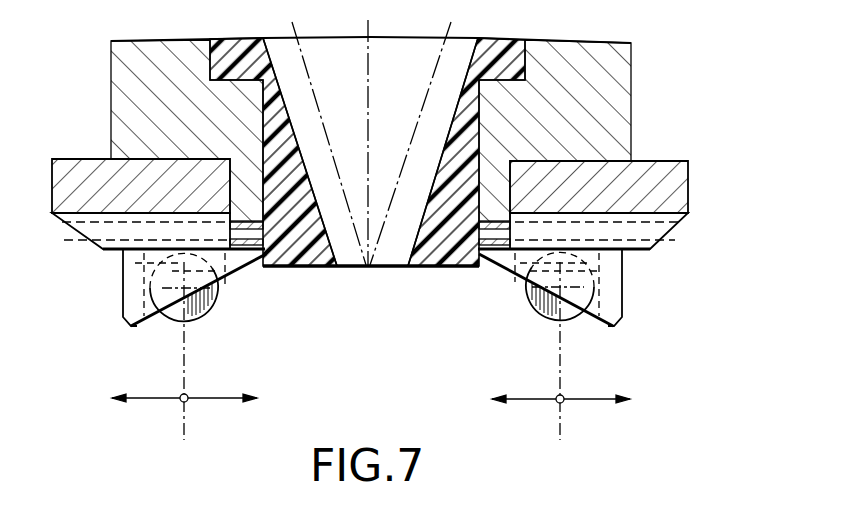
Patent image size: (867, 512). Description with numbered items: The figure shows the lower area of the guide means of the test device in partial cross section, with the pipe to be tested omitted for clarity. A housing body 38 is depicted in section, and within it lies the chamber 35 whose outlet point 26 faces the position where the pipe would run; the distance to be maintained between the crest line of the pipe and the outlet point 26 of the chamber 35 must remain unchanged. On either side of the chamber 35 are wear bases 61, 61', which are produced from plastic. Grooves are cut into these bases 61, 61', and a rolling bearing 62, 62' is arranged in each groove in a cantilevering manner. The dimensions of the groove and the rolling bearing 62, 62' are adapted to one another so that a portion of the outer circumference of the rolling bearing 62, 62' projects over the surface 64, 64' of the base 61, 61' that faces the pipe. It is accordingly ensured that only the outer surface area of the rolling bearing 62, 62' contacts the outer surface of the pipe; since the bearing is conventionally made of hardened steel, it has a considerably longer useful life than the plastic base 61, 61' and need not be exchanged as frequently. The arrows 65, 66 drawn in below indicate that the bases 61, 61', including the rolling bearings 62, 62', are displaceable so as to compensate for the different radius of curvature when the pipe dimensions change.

The nozzle body 38 is at (612, 100).
The chamber 35 is at (445, 262).
The outlet point 26 is at (370, 268).
The wear base 61 is at (137, 287).
The wear base 61' is at (603, 287).
The rolling bearing 62 is at (157, 346).
The rolling bearing 62' is at (576, 346).
The surface of the base facing the pipe 64 is at (207, 290).
The surface of the base facing the pipe 64' is at (540, 290).
The arrow 65 is at (207, 397).
The arrow 66 is at (532, 398).